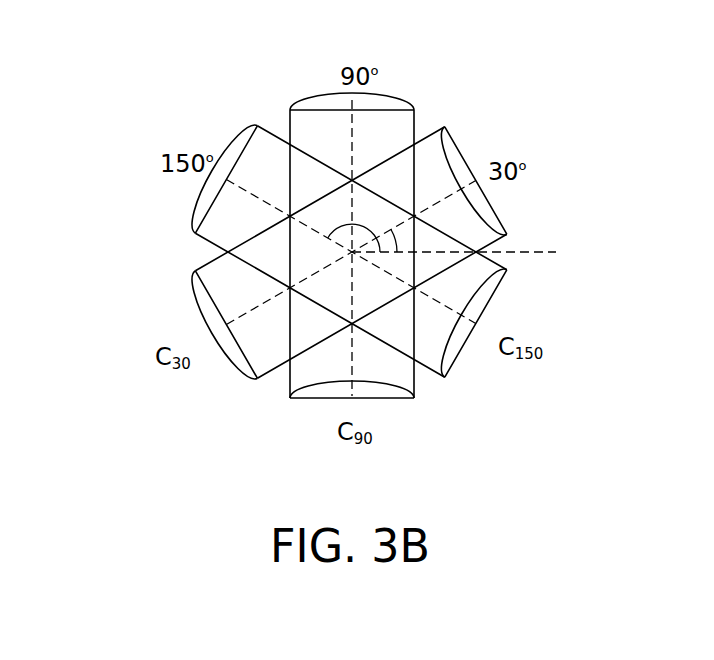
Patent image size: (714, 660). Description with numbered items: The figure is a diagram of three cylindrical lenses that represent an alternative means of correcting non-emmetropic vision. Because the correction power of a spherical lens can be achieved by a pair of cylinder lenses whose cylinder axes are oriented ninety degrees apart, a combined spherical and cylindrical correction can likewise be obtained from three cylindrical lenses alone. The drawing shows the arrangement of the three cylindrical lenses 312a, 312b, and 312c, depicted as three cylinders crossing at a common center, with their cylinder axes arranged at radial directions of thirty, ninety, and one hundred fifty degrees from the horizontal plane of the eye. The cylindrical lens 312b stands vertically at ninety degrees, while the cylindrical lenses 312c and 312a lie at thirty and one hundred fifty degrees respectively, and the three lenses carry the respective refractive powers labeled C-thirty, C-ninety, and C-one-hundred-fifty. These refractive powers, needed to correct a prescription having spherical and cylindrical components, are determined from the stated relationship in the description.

The cylindrical lens 312a is at (195, 231).
The cylindrical lens 312b is at (293, 101).
The cylindrical lens 312c is at (462, 150).